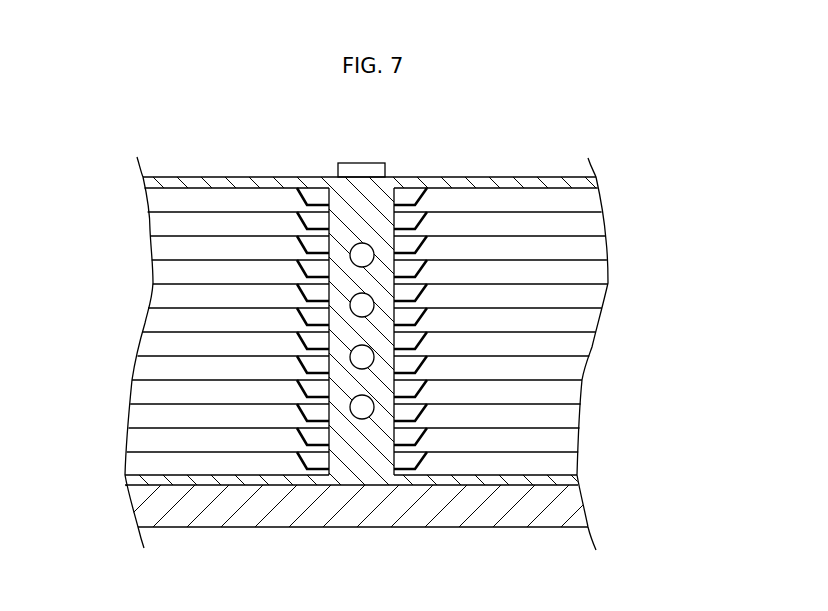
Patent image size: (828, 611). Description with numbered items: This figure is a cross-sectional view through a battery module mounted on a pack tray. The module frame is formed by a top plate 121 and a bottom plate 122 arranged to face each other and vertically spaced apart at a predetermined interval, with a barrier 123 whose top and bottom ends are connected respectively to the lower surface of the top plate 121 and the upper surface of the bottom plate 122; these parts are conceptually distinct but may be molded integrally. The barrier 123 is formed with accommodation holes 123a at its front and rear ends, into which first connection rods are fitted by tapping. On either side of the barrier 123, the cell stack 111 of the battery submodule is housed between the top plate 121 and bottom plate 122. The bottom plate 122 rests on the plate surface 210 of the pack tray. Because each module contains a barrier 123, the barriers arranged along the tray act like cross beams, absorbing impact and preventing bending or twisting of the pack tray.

The cell stack 111 is at (170, 320).
The top plate 121 is at (416, 177).
The bottom plate 122 is at (462, 480).
The barrier 123 is at (354, 198).
The accommodation holes 123a is at (361, 252).
The plate surface 210 is at (329, 518).